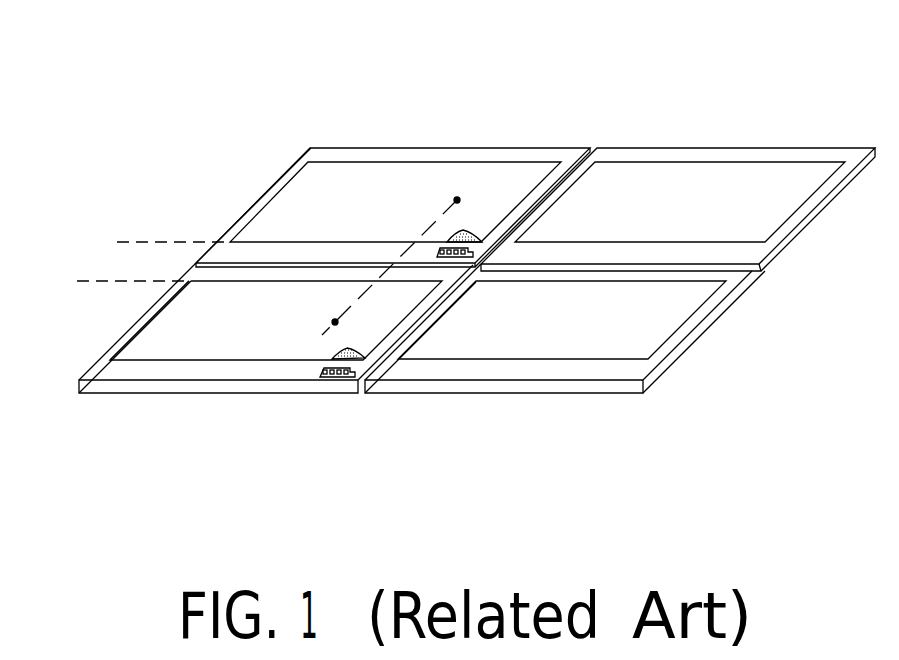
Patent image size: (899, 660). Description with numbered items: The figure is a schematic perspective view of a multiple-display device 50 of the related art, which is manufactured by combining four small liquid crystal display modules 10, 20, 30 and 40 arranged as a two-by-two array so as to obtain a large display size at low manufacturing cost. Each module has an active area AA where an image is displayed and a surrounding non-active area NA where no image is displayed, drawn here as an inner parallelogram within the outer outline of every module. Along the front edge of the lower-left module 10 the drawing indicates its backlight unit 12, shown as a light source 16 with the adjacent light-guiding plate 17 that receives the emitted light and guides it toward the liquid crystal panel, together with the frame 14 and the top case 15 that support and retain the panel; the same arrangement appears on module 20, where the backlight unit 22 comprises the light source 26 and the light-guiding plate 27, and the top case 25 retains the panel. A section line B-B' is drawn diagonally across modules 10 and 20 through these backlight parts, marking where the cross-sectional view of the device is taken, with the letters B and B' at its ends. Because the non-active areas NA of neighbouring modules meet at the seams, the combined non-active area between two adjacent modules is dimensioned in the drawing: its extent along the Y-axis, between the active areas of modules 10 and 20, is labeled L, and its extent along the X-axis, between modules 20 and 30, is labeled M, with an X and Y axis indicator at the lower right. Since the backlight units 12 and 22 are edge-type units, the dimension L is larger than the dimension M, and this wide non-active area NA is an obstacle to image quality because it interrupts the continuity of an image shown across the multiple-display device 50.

The multiple-display device 50 is at (833, 45).
The liquid crystal display module 10 is at (302, 338).
The liquid crystal display module 20 is at (412, 213).
The liquid crystal display module 30 is at (707, 223).
The liquid crystal display module 40 is at (588, 338).
The backlight unit 12 is at (362, 436).
The frame 14 is at (100, 392).
The top case 15 is at (110, 362).
The light source 16 is at (328, 378).
The light-guiding plate 17 is at (368, 390).
The backlight unit 22 is at (511, 377).
The top case 25 is at (286, 163).
The light source 26 is at (455, 258).
The light-guiding plate 27 is at (480, 250).
The non-active area NA is at (324, 156).
The active area AA is at (418, 173).
The dimension L is at (130, 243).
The dimension M is at (575, 148).
The section line B-B' B is at (349, 326).
The section line B- B' is at (502, 127).
The X-axis X is at (695, 455).
The Y-axis Y is at (777, 412).